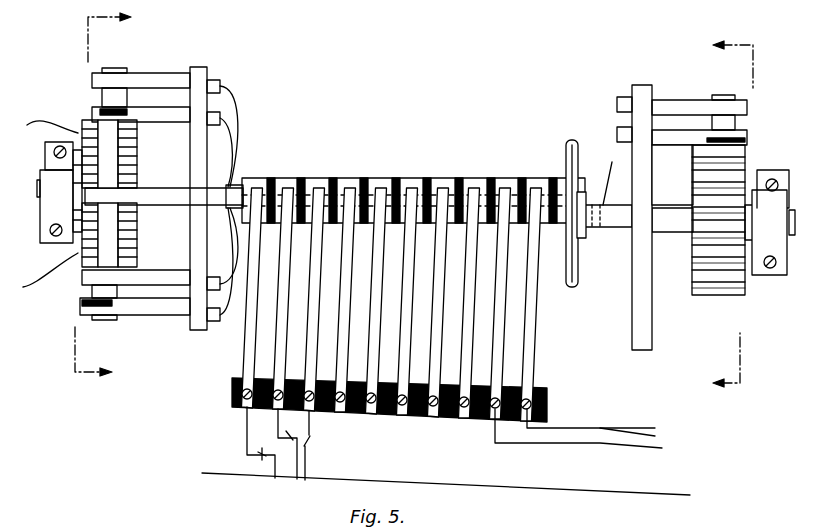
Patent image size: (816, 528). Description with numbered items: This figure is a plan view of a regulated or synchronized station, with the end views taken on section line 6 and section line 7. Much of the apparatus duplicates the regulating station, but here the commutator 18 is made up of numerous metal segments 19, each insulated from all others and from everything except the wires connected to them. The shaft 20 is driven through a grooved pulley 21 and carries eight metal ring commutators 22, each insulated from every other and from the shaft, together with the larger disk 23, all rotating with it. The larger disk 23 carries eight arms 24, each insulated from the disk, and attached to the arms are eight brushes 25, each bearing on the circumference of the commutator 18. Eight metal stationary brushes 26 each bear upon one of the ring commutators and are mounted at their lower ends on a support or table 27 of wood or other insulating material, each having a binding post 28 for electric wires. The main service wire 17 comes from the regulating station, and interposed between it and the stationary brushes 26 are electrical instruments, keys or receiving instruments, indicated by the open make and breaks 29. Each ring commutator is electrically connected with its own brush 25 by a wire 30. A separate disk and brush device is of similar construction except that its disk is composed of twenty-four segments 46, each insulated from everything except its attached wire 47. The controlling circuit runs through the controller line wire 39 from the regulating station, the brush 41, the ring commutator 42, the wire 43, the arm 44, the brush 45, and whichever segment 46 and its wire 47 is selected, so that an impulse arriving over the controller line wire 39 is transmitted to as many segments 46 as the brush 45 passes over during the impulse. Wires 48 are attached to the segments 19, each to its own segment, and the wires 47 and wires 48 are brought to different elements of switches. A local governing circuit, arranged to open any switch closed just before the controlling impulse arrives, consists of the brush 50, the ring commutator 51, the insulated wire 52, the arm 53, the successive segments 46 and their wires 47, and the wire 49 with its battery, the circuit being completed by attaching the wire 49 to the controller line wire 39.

The section line 6- 6 is at (110, 198).
The section line 7- 7 is at (725, 216).
The main service wire 17 is at (342, 477).
The commutator 18 is at (77, 246).
The metal segments 19 is at (137, 153).
The shaft 20 is at (240, 186).
The grooved pulley 21 is at (566, 162).
The metal ring commutators 22 is at (333, 178).
The larger disk 23 is at (190, 170).
The arms 24 is at (142, 73).
The brushes 25 is at (102, 193).
The stationary brushes 26 is at (250, 330).
The support or table 27 is at (380, 413).
The binding post 28 is at (245, 392).
The make and breaks 29 is at (325, 456).
The wire 30 is at (240, 117).
The controller line wire 39 is at (640, 450).
The brush 41 is at (500, 300).
The ring commutator 42 is at (509, 190).
The wire 43 is at (602, 205).
The arm 44 is at (667, 106).
The brush 45 is at (718, 123).
The segments 46 is at (698, 233).
The wires 47 is at (762, 170).
The wires 48 is at (52, 121).
The wire 49 is at (644, 430).
The brush 50 is at (532, 343).
The ring commutator 51 is at (546, 230).
The insulated wire 52 is at (616, 183).
The arm 53 is at (672, 141).